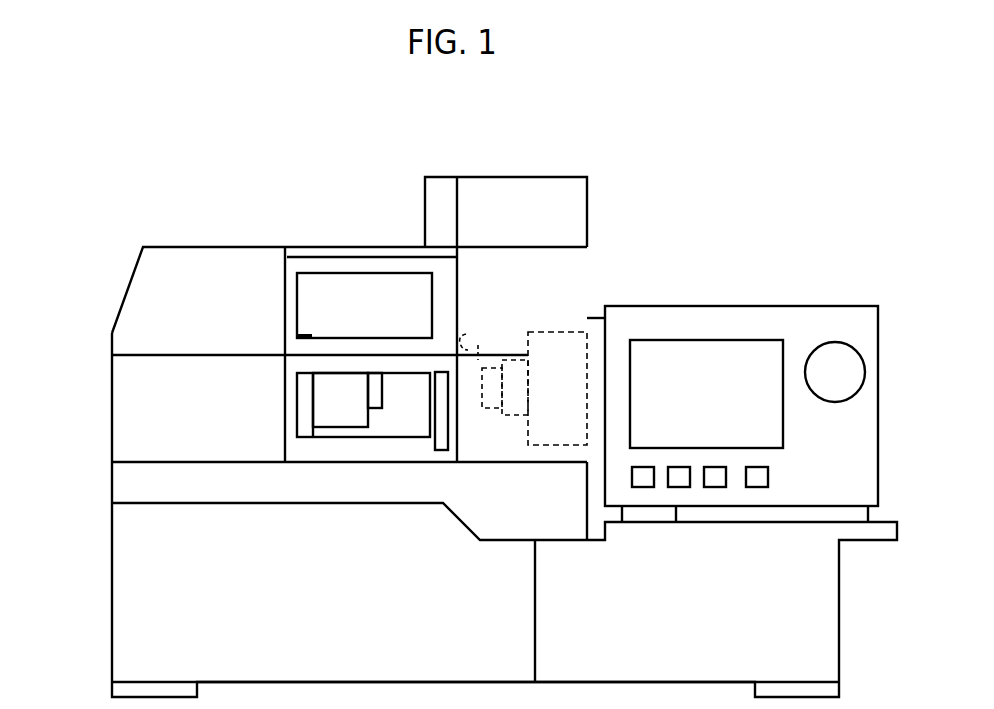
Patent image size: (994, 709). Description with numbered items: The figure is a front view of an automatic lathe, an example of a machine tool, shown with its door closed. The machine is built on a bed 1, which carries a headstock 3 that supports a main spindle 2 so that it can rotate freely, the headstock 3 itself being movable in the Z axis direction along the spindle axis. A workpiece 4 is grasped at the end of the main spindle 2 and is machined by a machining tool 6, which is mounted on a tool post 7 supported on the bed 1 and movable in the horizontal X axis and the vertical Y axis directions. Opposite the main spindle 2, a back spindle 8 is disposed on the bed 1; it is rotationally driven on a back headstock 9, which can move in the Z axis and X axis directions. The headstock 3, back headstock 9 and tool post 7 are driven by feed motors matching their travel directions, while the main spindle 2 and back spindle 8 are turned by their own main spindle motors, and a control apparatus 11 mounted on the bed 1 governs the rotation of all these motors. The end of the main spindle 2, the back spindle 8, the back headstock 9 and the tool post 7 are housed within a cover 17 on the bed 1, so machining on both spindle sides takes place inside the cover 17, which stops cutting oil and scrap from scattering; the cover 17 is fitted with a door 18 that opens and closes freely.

The bed 1 is at (128, 563).
The main spindle 2 is at (517, 350).
The headstock 3 is at (593, 355).
The workpiece 4 is at (495, 345).
The machining tool 6 is at (462, 340).
The tool post 7 is at (478, 345).
The back spindle 8 is at (378, 388).
The back headstock 9 is at (300, 410).
The control apparatus 11 is at (788, 320).
The cover 17 is at (186, 262).
The door 18 is at (295, 268).